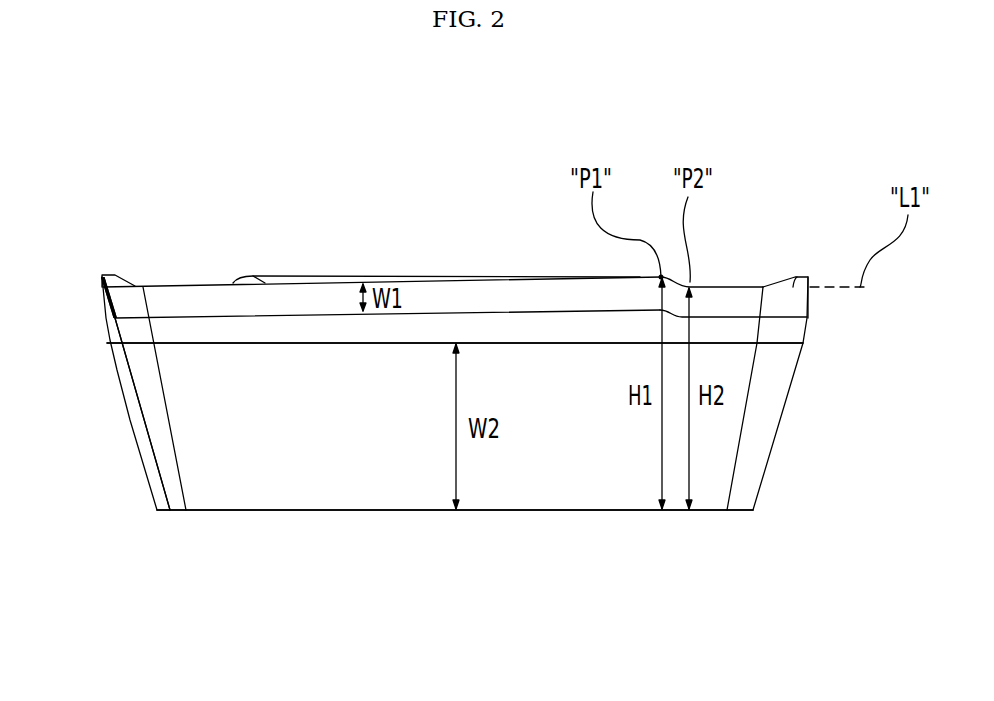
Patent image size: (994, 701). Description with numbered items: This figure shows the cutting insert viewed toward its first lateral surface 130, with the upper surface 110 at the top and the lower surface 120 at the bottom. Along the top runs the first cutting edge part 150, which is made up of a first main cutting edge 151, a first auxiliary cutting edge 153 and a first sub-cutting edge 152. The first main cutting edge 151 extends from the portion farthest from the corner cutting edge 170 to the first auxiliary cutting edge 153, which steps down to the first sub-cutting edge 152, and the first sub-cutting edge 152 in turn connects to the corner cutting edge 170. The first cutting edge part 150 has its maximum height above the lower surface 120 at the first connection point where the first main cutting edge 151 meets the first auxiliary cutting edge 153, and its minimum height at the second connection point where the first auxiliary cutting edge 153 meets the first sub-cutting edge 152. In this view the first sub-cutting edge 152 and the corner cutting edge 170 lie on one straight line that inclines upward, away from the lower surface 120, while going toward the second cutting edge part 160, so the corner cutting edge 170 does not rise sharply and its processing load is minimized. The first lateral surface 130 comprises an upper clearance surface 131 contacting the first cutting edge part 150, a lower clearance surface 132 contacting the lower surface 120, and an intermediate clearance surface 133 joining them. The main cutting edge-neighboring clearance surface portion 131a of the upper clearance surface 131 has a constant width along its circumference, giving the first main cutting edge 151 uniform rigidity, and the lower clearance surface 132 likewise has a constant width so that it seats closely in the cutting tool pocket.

The upper surface 110 is at (297, 270).
The lower surface 120 is at (237, 515).
The first lateral surface 130 is at (361, 466).
The upper clearance surface 131 is at (135, 393).
The main cutting edge-neighboring clearance surface portion 131a is at (216, 305).
The lower clearance surface 132 is at (291, 490).
The intermediate clearance surface 133 is at (257, 328).
The first cutting edge part 150 is at (155, 282).
The first main cutting edge 151 is at (180, 285).
The first sub-cutting edge 152 is at (730, 287).
The first auxiliary cutting edge 153 is at (672, 278).
The second cutting edge part 160 is at (815, 272).
The corner cutting edge 170 is at (793, 275).